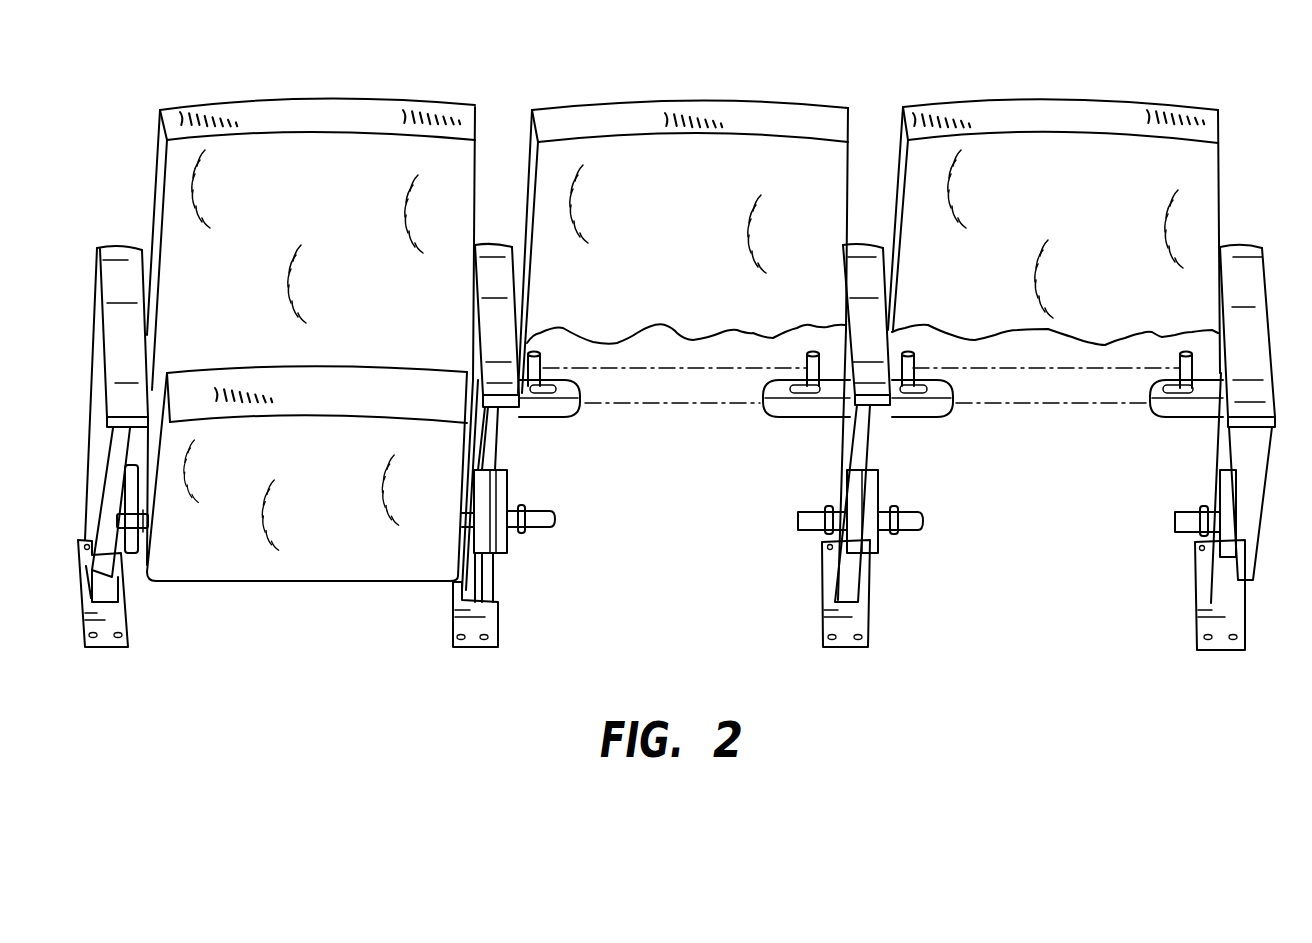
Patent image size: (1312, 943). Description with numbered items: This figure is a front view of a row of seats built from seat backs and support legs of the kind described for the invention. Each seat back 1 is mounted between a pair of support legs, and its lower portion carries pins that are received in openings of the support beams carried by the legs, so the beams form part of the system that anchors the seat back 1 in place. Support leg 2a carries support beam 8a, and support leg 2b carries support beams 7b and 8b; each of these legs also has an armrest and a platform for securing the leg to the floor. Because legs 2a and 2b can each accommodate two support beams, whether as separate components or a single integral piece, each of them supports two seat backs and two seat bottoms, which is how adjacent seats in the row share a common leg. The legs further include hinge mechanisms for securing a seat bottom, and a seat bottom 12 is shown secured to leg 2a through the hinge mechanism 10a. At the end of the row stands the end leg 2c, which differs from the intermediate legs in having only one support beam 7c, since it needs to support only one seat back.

The seat back 1 is at (647, 158).
The support leg 2a is at (477, 577).
The support leg 2b is at (848, 575).
The end leg 2c is at (1220, 583).
The support beam 7b is at (818, 413).
The support beam 7c is at (1193, 411).
The support beam 8a is at (543, 413).
The support beam 8b is at (898, 411).
The hinge mechanism 10a is at (498, 535).
The seat bottom 12 is at (315, 527).